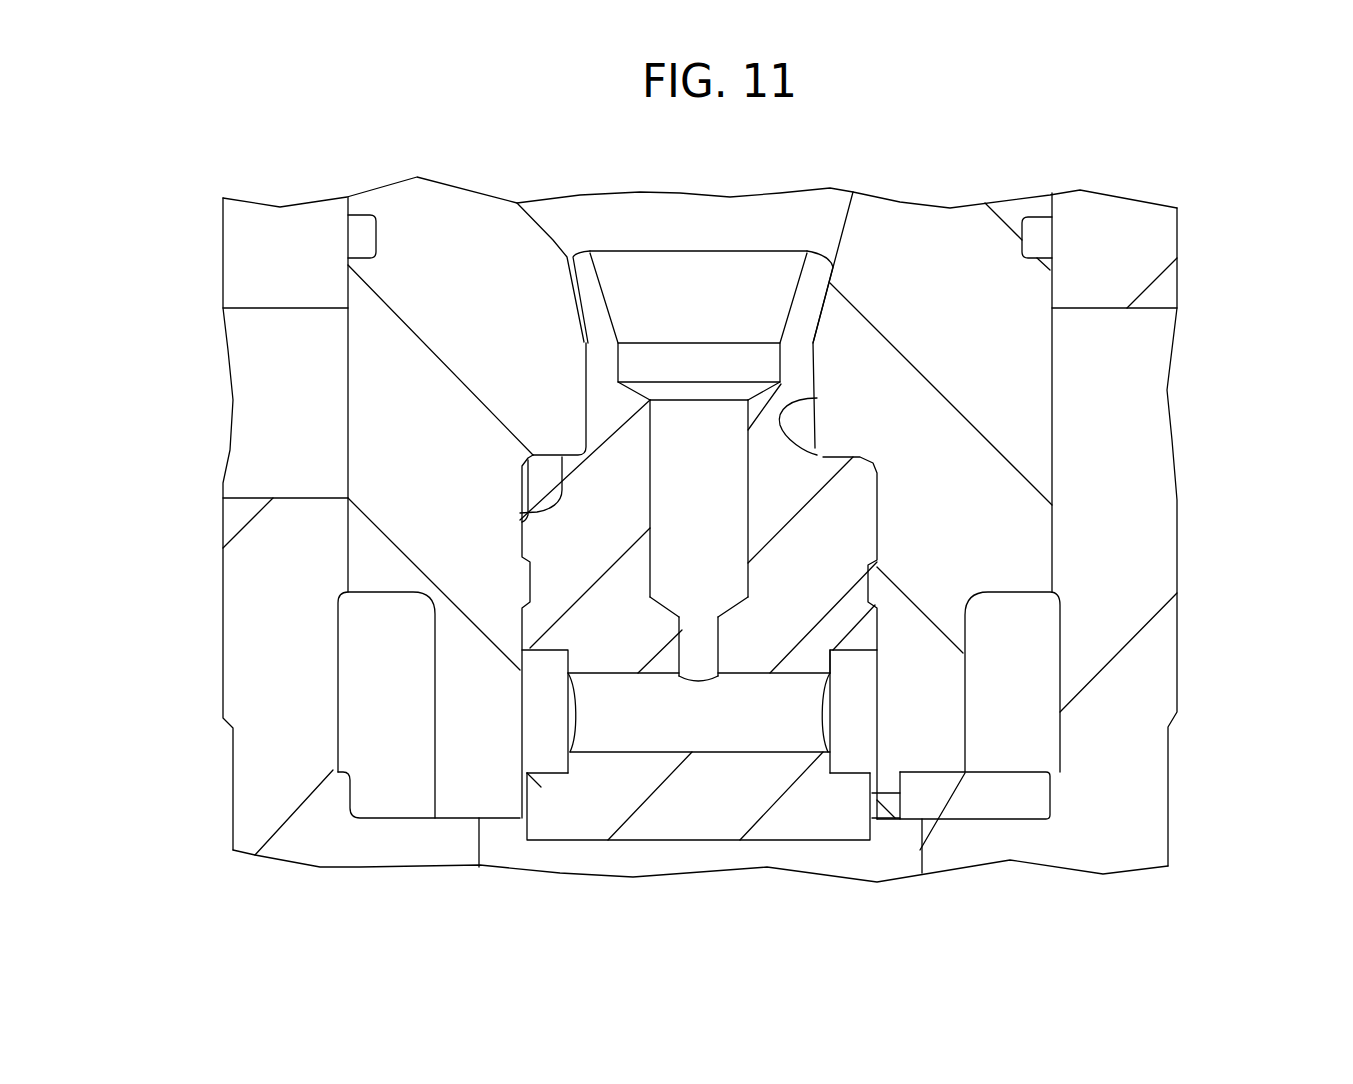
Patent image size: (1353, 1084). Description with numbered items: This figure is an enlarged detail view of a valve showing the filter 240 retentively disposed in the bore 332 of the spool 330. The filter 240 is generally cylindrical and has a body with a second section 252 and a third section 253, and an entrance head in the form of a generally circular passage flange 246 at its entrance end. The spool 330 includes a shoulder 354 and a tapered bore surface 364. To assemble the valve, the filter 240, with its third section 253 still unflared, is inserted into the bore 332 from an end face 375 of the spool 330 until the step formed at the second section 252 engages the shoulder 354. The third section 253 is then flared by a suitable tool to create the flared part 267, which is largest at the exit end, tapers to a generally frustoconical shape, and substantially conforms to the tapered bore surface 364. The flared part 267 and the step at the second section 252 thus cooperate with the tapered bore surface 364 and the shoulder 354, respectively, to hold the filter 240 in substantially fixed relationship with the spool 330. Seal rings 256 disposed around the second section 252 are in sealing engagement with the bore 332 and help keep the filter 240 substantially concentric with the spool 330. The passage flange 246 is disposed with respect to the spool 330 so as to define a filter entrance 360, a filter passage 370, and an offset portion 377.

The spool 330 is at (410, 250).
The bore 332 is at (817, 453).
The tapered bore surface 364 is at (553, 240).
The shoulder 354 is at (557, 433).
The flared part 267 is at (590, 288).
The third section 253 is at (790, 358).
The filter 240 is at (833, 535).
The second section 252 is at (520, 512).
The seal rings 256 is at (520, 537).
The end face 375 is at (491, 818).
The passage flange 246 is at (548, 810).
The offset portion 377 is at (685, 832).
The filter entrance 360 is at (878, 830).
The filter passage 370 is at (873, 793).